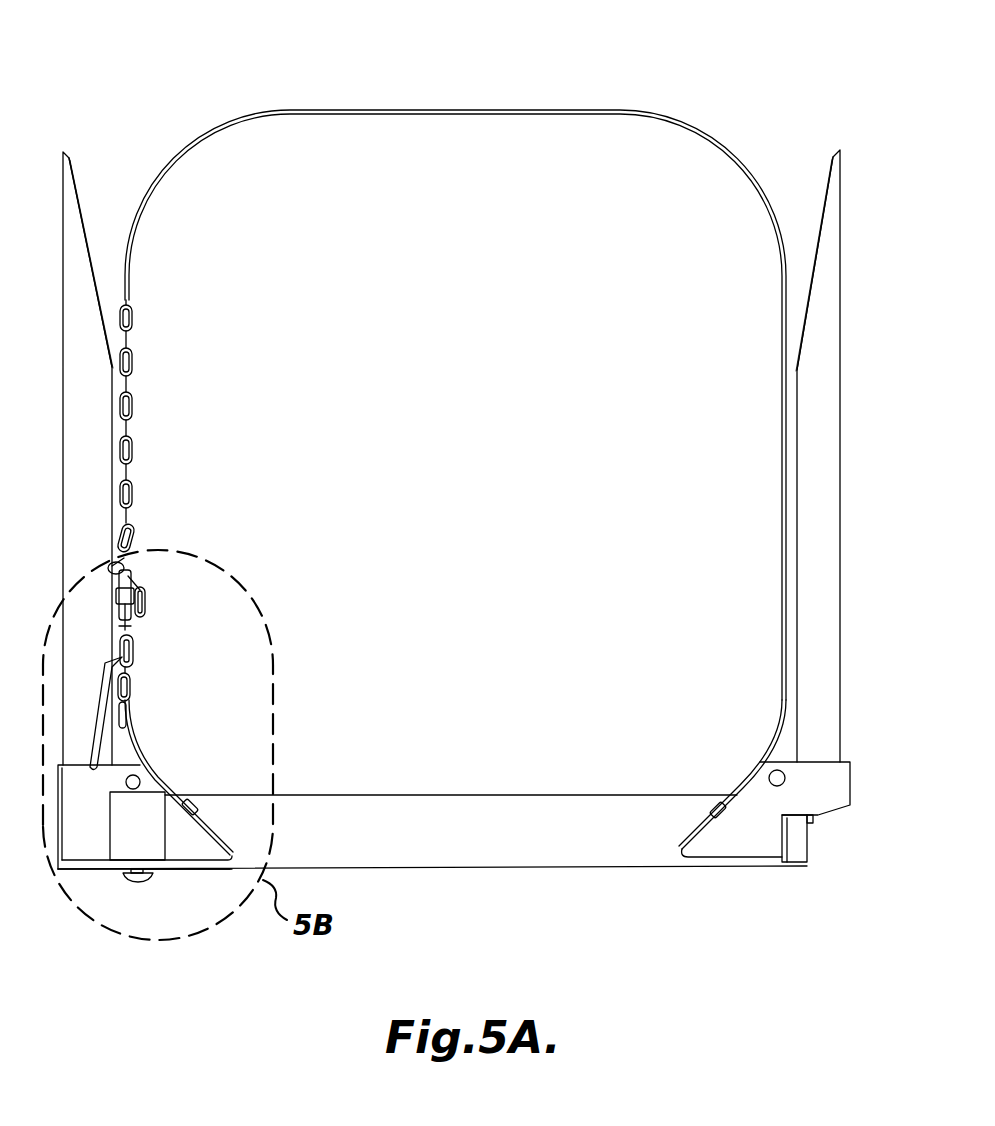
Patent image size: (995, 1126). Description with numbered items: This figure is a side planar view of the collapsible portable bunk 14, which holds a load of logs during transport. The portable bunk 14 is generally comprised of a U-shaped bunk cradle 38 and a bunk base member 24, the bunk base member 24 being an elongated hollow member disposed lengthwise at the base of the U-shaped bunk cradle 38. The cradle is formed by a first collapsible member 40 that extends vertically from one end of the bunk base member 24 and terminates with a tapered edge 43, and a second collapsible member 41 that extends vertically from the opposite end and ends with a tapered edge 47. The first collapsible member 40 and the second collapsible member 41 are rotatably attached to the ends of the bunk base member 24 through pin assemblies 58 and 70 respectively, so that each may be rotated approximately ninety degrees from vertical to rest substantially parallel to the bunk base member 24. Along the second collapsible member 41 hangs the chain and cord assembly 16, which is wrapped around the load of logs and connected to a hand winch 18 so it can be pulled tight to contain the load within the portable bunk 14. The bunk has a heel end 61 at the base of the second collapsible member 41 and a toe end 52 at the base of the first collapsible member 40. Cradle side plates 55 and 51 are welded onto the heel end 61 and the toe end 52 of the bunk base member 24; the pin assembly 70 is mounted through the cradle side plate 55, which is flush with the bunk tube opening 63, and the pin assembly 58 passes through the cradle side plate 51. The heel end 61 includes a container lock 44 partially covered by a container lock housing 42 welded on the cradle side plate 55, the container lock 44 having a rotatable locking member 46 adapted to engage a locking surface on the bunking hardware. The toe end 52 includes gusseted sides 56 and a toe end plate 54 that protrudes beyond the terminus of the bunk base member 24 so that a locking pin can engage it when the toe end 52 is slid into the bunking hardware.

The portable bunk 14 is at (206, 109).
The chain and cord assembly 16 is at (472, 109).
The hand winch 18 is at (133, 662).
The bunk base member 24 is at (389, 806).
The U-shaped bunk cradle 38 is at (60, 482).
The first collapsible member 40 is at (806, 464).
The second collapsible member 41 is at (99, 488).
The container lock housing 42 is at (162, 815).
The tapered edge 43 is at (818, 218).
The container lock 44 is at (166, 882).
The rotatable locking member 46 is at (137, 882).
The tapered edge 47 is at (86, 218).
The cradle side plate 51 is at (727, 843).
The toe end 52 is at (816, 872).
The toe end plate 54 is at (806, 832).
The left bracket plate 55 is at (190, 848).
The gusseted sides 56 is at (793, 856).
The pin assembly 58 is at (770, 777).
The heel end 61 is at (86, 878).
The bunk tube opening 63 is at (44, 848).
The pin assembly 70 is at (140, 777).